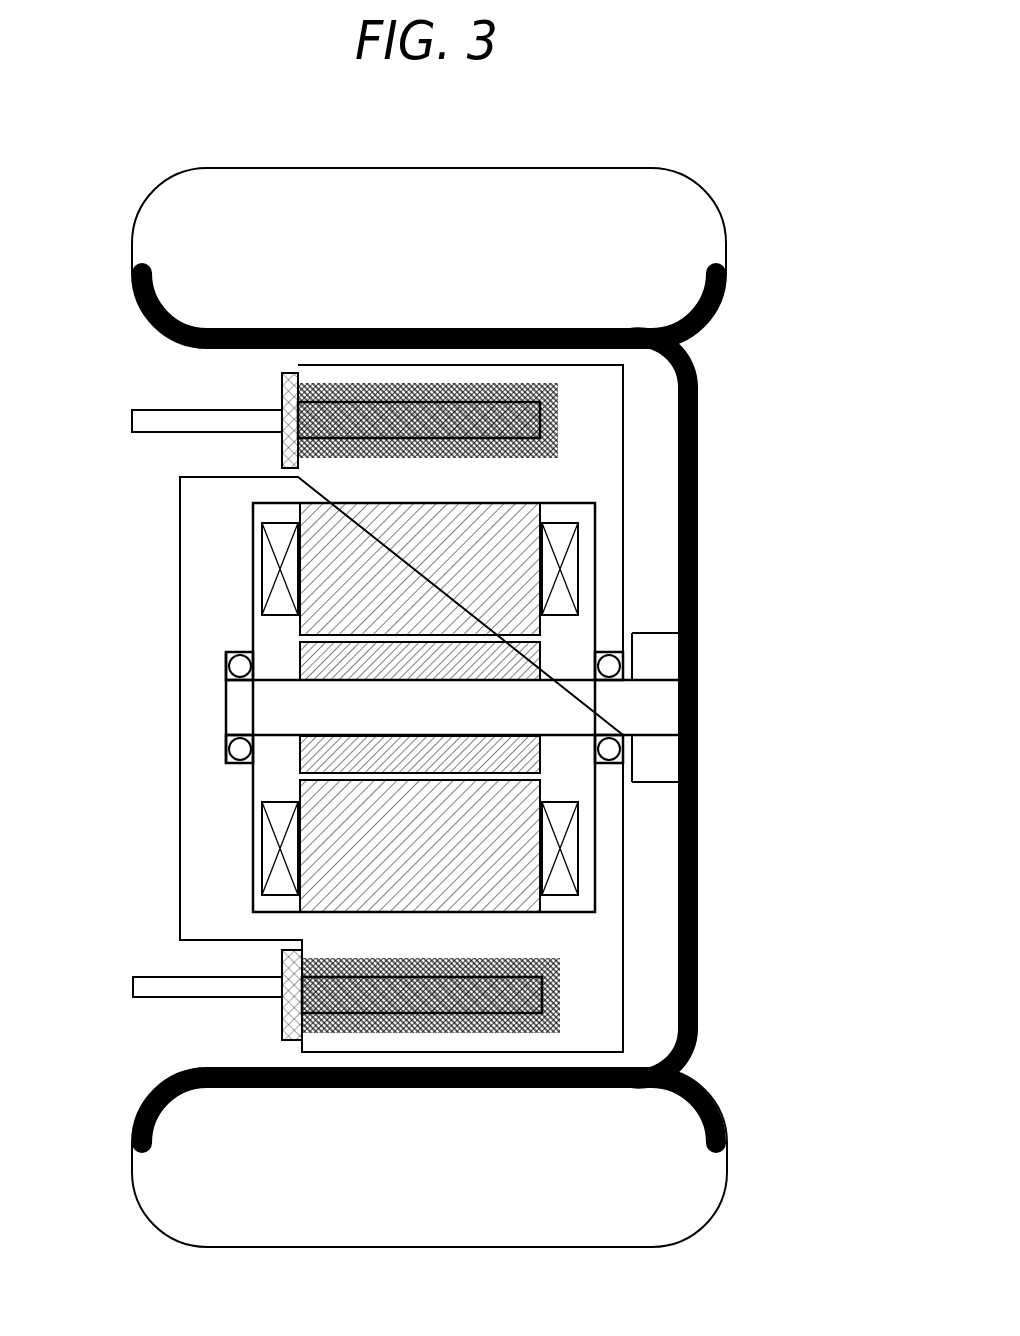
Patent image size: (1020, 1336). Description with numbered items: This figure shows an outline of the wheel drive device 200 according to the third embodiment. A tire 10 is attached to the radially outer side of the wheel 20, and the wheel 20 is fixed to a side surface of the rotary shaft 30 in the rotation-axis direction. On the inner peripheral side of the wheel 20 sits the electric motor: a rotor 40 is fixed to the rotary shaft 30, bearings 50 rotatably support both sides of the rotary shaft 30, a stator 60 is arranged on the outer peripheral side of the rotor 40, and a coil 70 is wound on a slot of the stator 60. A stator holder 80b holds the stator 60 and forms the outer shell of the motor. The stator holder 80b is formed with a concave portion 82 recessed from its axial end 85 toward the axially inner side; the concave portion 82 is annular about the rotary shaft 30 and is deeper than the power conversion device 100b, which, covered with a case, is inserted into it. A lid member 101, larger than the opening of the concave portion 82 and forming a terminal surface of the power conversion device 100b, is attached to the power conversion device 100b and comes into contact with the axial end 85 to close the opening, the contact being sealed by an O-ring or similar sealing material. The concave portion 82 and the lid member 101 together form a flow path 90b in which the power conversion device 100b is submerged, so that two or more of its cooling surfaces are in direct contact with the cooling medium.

The wheel drive device 200 is at (690, 138).
The tire 10 is at (717, 222).
The wheel 20 is at (698, 443).
The rotary shaft 30 is at (662, 712).
The rotor 40 is at (525, 660).
The bearing 50 is at (237, 672).
The stator 60 is at (525, 790).
The coil 70 is at (562, 553).
The stator holder 80b is at (217, 495).
The concave portion 82 is at (560, 997).
The axial end 85 is at (300, 1045).
The flow path 90b is at (548, 968).
The power conversion device 100b is at (317, 420).
The lid member 101 is at (287, 448).